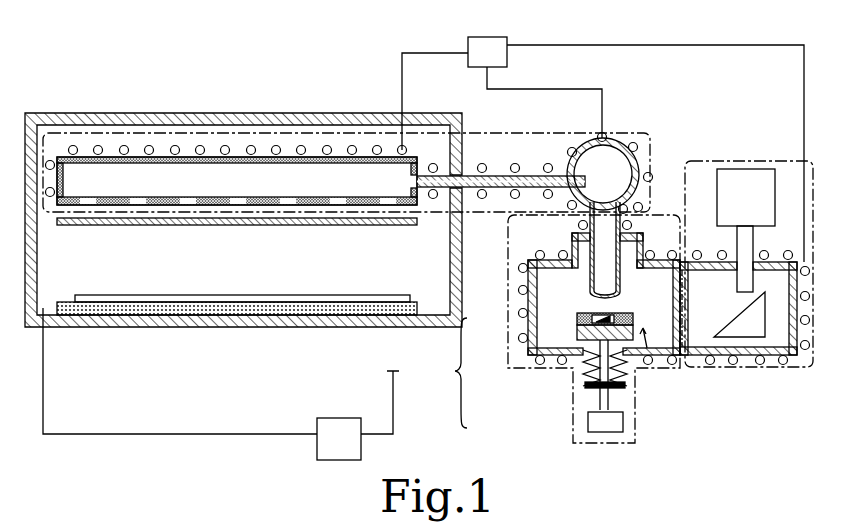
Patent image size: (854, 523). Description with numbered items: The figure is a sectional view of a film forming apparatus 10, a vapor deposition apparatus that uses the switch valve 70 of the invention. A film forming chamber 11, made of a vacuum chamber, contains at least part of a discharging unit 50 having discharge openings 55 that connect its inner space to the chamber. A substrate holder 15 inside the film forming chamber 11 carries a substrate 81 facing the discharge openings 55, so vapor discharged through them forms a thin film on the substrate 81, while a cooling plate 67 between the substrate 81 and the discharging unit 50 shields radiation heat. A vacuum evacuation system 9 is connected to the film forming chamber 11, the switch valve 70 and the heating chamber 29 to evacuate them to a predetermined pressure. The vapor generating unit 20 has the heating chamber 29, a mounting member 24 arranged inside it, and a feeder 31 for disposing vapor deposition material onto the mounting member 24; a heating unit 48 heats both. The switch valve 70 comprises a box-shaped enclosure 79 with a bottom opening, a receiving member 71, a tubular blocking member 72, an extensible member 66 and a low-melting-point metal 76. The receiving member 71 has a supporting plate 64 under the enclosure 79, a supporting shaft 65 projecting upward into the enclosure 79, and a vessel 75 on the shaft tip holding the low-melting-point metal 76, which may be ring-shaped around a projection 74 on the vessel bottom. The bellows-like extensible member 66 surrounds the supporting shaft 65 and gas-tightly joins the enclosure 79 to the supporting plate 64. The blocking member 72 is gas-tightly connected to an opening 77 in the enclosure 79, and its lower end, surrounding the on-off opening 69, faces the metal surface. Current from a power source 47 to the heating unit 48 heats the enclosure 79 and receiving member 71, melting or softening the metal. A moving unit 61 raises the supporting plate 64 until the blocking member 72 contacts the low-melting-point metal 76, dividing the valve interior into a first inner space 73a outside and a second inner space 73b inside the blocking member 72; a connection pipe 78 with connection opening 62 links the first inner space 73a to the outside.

The film forming apparatus 10 is at (52, 38).
The film forming chamber 11 is at (153, 113).
The discharging unit 50 is at (345, 130).
The discharge openings 55 is at (245, 195).
The cooling plate 67 is at (212, 226).
The substrate 81 is at (285, 303).
The substrate holder 15 is at (230, 327).
The vacuum evacuation system 9 is at (341, 418).
The power source 47 is at (468, 45).
The opening 77 is at (613, 193).
The blocking member 72 is at (592, 250).
The switch valve 70 is at (604, 444).
The on-off opening 69 is at (596, 298).
The second inner space 73b is at (535, 258).
The heating unit 48 is at (518, 268).
The enclosure 79 is at (519, 289).
The first inner space 73a is at (646, 364).
The projection 74 is at (577, 318).
The vessel 75 is at (577, 333).
The low-melting-point metal 76 is at (622, 318).
The supporting shaft 65 is at (583, 365).
The supporting plate 64 is at (585, 386).
The moving unit 61 is at (623, 424).
The extensible member 66 is at (636, 375).
The receiving member 71 is at (508, 350).
The vapor generating unit 20 is at (700, 161).
The feeder 31 is at (745, 169).
The mounting member 24 is at (745, 355).
The connection opening 62 is at (677, 322).
The connection pipe 78 is at (684, 262).
The heating chamber 29 is at (797, 360).